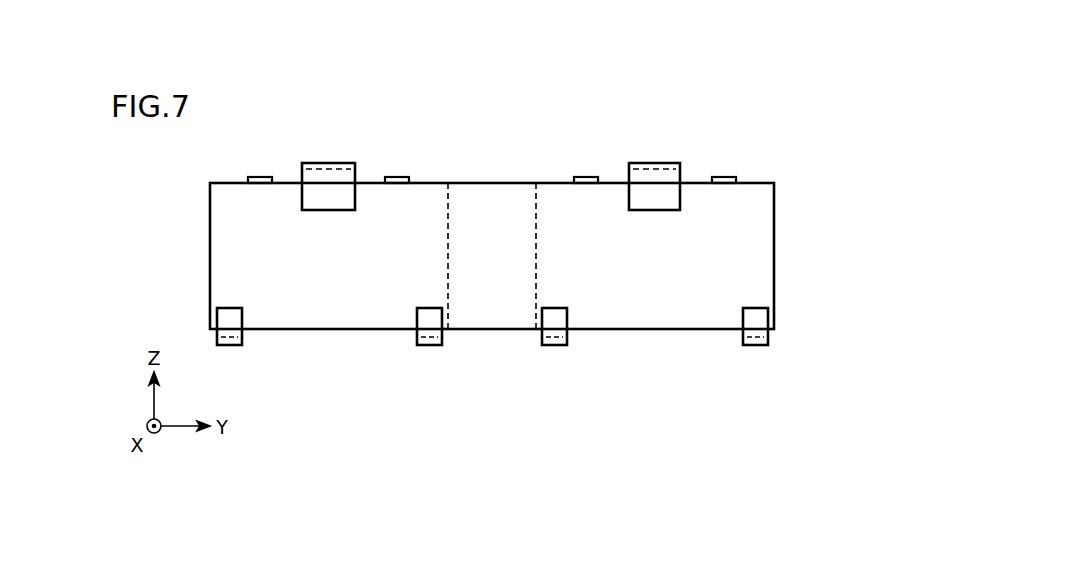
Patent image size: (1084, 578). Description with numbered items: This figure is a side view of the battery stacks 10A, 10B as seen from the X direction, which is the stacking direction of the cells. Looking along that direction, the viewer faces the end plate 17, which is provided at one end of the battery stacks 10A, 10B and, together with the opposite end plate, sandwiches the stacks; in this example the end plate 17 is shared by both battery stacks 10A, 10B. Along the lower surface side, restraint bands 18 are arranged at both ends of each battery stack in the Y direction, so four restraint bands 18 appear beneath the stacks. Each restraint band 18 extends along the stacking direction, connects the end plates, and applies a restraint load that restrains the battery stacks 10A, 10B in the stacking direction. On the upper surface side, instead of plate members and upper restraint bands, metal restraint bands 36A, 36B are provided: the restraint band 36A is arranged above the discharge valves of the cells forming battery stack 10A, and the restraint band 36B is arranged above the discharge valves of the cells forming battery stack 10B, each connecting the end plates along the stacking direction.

The end plate 17 is at (755, 257).
The restraint band 18 is at (226, 347).
The restraint band 36A is at (331, 161).
The restraint band 36B is at (656, 161).
The battery stack 10A is at (325, 345).
The battery stack 10B is at (657, 345).